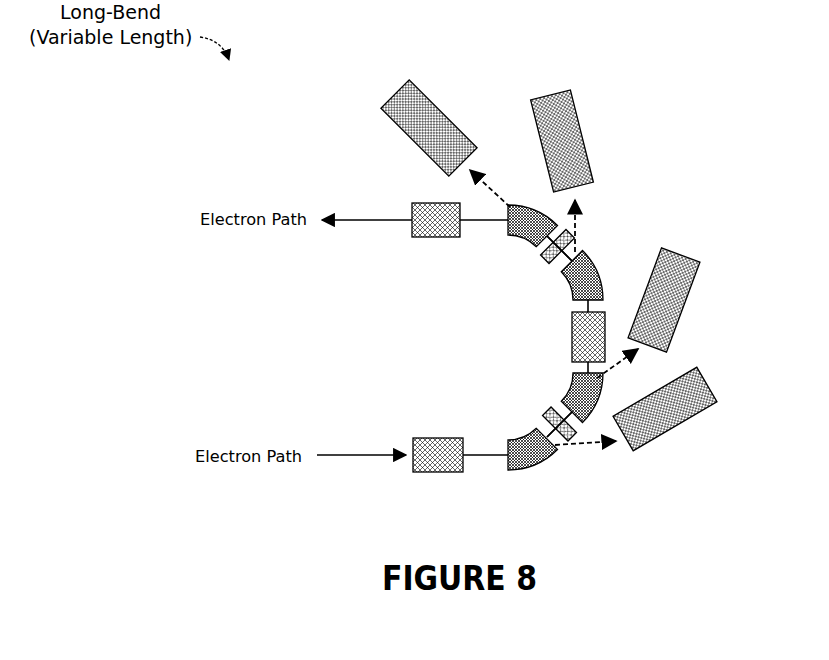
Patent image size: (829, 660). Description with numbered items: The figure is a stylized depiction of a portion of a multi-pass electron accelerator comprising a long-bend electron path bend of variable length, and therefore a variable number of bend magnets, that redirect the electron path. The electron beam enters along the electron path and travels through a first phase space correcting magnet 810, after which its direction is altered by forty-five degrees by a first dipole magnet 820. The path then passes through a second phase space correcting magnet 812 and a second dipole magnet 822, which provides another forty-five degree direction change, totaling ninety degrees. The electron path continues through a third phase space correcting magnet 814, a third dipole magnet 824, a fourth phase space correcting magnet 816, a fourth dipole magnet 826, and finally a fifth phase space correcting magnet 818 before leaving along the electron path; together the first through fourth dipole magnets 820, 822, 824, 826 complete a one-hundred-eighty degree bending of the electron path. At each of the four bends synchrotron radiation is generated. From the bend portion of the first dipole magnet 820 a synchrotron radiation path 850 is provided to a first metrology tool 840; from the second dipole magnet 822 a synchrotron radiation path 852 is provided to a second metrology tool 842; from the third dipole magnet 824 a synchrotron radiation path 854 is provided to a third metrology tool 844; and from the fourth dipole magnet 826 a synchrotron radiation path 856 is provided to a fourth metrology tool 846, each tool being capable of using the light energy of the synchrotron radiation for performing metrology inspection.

The first phase space correcting magnet 810 is at (447, 475).
The second phase space correcting magnet 812 is at (545, 413).
The third phase space correcting magnet 814 is at (572, 352).
The fourth phase space correcting magnet 816 is at (550, 263).
The fifth phase space correcting magnet 818 is at (447, 237).
The first 45° dipole magnet 820 is at (533, 472).
The second 45° dipole magnet 822 is at (573, 397).
The third 45° dipole magnet 824 is at (593, 272).
The fourth 45° dipole magnet 826 is at (518, 238).
The first metrology tool 840 is at (710, 387).
The second metrology tool 842 is at (692, 262).
The third metrology tool 844 is at (540, 93).
The fourth metrology tool 846 is at (447, 117).
The synchrotron radiation path 850 is at (582, 447).
The synchrotron radiation path 852 is at (612, 364).
The synchrotron radiation path 854 is at (575, 213).
The synchrotron radiation path 856 is at (492, 185).